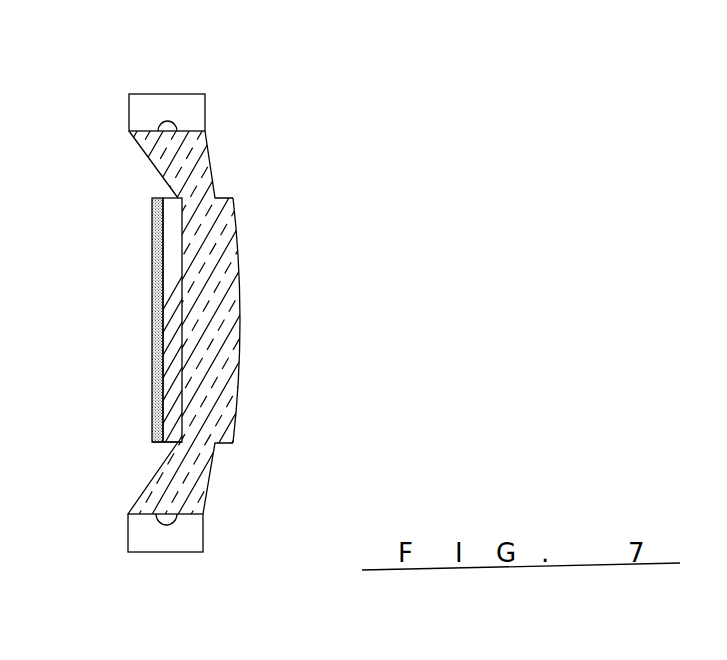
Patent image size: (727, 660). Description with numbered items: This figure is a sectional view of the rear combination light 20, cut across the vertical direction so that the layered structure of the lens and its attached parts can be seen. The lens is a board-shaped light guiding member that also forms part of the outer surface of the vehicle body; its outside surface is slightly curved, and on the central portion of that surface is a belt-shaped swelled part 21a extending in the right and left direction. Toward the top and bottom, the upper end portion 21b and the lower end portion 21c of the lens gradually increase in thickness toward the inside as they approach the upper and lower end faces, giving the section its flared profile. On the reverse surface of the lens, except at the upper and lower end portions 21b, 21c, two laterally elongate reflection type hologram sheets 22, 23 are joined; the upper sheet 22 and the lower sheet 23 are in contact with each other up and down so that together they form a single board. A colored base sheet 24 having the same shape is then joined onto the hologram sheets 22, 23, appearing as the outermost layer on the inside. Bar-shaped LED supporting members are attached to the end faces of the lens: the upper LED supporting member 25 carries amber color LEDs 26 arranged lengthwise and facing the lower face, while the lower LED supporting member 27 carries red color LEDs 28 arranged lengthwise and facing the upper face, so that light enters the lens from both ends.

The rear combination light 20 is at (308, 237).
The swelled part 21a is at (245, 312).
The upper end portion 21b is at (210, 153).
The lower end portion 21c is at (207, 490).
The reflection type hologram sheet 22 is at (170, 195).
The reflection type hologram sheet 23 is at (168, 447).
The colored base sheet 24 is at (178, 320).
The upper LED supporting member 25 is at (158, 94).
The amber color LED 26 is at (177, 117).
The lower LED supporting member 27 is at (163, 552).
The red color LED 28 is at (178, 527).